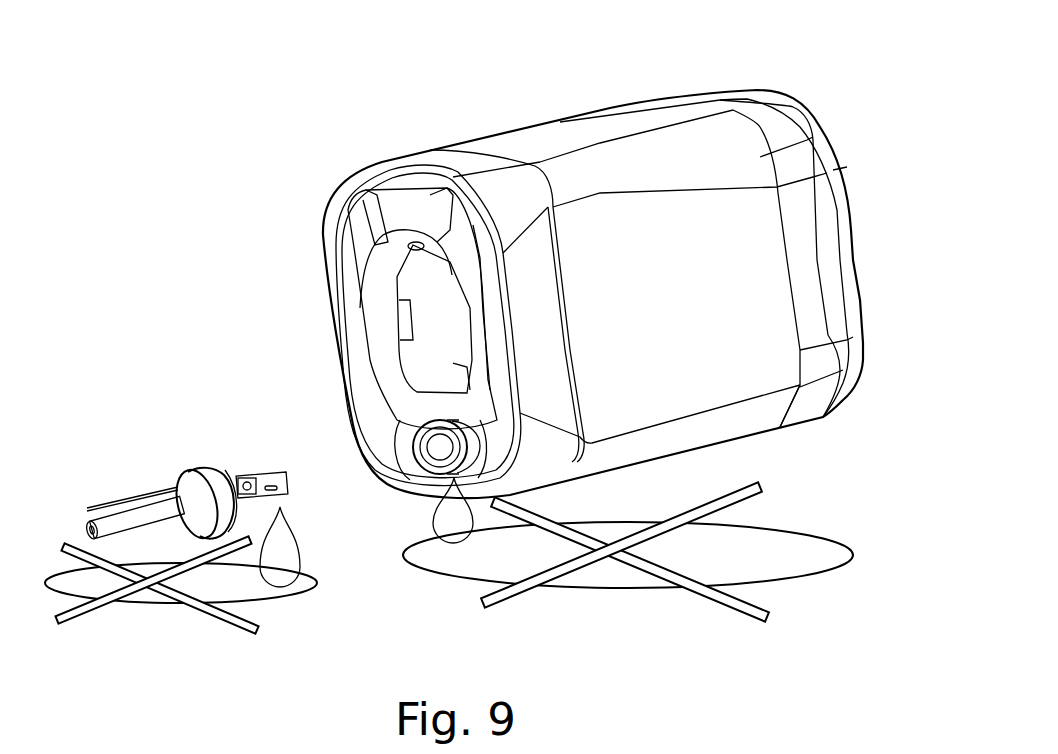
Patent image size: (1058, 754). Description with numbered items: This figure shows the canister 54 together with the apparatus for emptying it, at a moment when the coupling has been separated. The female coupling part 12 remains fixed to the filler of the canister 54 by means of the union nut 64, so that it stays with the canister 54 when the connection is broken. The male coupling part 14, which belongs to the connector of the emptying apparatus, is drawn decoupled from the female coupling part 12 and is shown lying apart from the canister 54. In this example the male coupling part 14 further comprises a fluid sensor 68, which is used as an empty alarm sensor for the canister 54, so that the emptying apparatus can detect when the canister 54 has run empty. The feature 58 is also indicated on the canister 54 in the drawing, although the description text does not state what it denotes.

The canister 54 is at (565, 133).
The container bottom wall 58 is at (803, 410).
The union nut 64 is at (410, 415).
The female coupling part 12 is at (425, 483).
The male coupling part 14 is at (202, 458).
The fluid sensor 68 is at (187, 470).